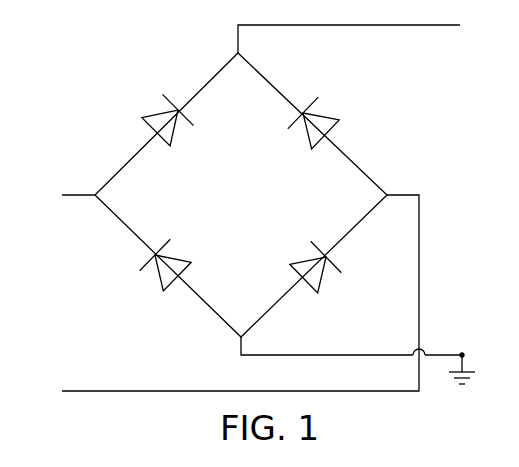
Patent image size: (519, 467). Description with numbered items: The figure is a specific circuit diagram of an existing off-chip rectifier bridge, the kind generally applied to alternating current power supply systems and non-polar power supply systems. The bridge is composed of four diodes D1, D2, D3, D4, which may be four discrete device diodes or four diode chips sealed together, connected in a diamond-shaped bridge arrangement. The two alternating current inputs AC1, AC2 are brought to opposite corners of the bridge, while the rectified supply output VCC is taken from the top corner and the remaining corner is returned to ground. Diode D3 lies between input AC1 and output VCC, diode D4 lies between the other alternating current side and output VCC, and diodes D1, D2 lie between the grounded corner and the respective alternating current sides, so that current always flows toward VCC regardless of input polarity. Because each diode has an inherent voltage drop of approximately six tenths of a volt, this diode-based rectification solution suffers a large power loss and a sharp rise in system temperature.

The diode D1 is at (163, 274).
The diode D2 is at (318, 275).
The diode D3 is at (172, 126).
The diode D4 is at (308, 127).
The supply voltage output VCC is at (365, 35).
The first AC input AC1 is at (58, 196).
The second AC input AC2 is at (223, 298).